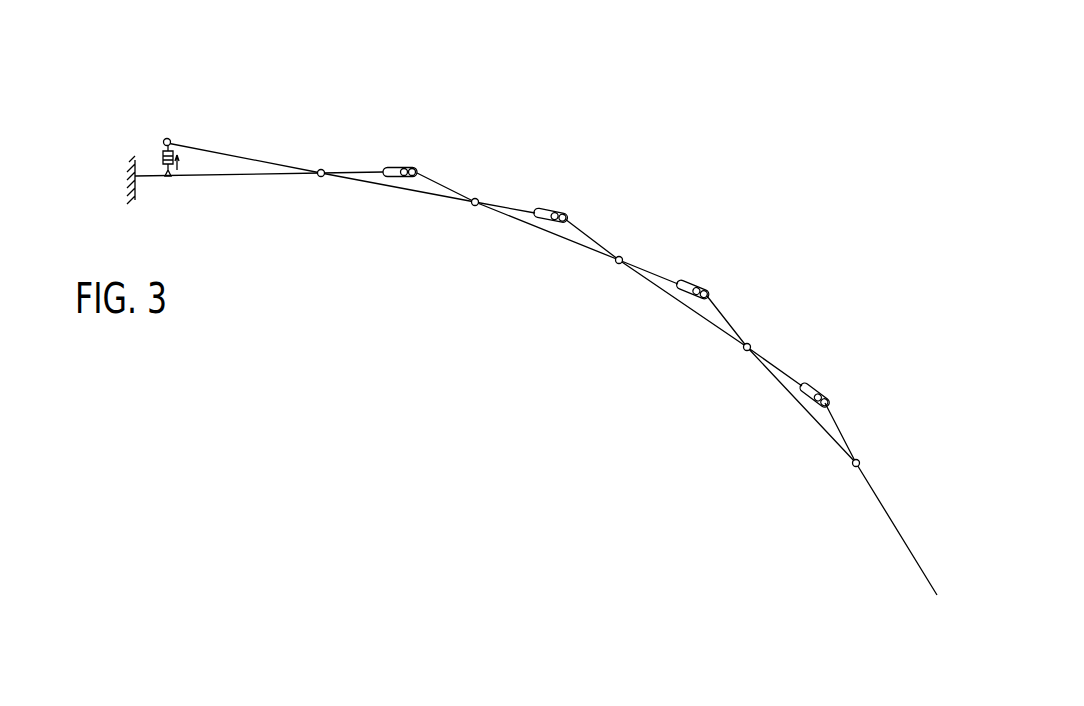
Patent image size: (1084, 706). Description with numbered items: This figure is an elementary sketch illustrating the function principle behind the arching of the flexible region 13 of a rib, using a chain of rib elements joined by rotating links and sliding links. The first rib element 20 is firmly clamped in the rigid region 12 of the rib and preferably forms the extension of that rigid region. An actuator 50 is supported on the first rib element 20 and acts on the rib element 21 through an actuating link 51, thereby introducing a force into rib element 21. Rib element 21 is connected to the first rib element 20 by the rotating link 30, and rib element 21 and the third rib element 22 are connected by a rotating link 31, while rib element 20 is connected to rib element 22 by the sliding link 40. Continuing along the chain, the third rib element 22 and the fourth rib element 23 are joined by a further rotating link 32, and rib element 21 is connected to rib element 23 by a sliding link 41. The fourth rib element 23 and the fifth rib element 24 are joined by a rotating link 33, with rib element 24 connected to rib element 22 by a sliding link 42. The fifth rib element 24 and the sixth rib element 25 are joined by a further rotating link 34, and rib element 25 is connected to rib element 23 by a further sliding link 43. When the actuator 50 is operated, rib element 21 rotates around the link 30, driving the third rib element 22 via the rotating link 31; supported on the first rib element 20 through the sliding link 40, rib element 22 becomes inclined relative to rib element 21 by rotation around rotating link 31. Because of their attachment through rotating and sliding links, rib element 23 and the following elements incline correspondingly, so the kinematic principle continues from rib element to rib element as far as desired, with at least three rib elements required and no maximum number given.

The rigid region 12 is at (120, 183).
The flexible region 13 is at (812, 62).
The first rib element 20 is at (233, 178).
The second rib element 21 is at (233, 153).
The third rib element 22 is at (440, 187).
The fourth rib element 23 is at (593, 240).
The fifth rib element 24 is at (732, 328).
The sixth rib element 25 is at (843, 435).
The rotating link 30 is at (321, 169).
The rotating link 31 is at (471, 206).
The rotating link 32 is at (616, 264).
The rotating link 33 is at (744, 351).
The rotating link 34 is at (853, 467).
The sliding link 40 is at (405, 165).
The sliding link 41 is at (552, 210).
The sliding link 42 is at (696, 283).
The sliding link 43 is at (810, 386).
The actuator 50 is at (160, 162).
The actuating link 51 is at (168, 139).